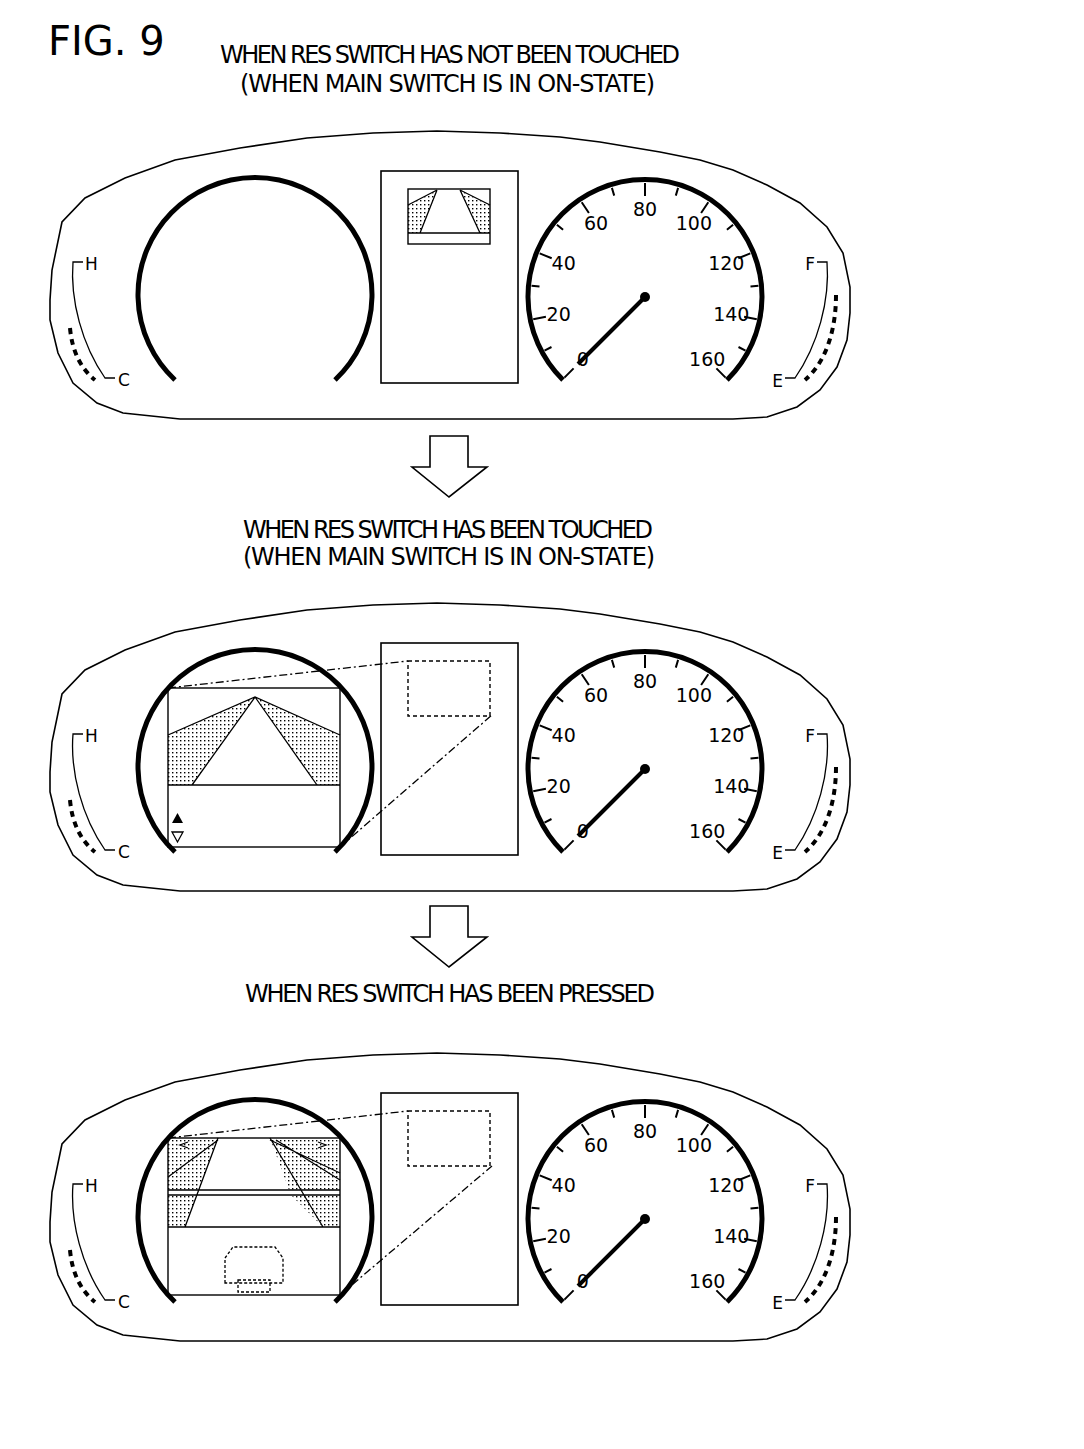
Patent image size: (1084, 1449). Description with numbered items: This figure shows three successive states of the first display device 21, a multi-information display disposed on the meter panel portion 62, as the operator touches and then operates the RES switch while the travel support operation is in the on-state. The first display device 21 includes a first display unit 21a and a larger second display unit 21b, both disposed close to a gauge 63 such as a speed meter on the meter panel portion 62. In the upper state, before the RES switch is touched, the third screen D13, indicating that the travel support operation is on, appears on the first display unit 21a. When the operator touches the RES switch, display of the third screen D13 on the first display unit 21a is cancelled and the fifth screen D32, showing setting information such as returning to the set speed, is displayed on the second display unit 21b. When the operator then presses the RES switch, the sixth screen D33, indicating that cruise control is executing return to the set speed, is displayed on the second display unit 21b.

The first display device 21 is at (166, 163).
The first display unit 21a is at (492, 208).
The second display unit 21b is at (283, 193).
The third screen D13 is at (474, 189).
The gauge 63 is at (661, 185).
The meter panel portion 62 is at (449, 710).
The fifth screen D32 is at (168, 717).
The sixth screen D33 is at (168, 1177).